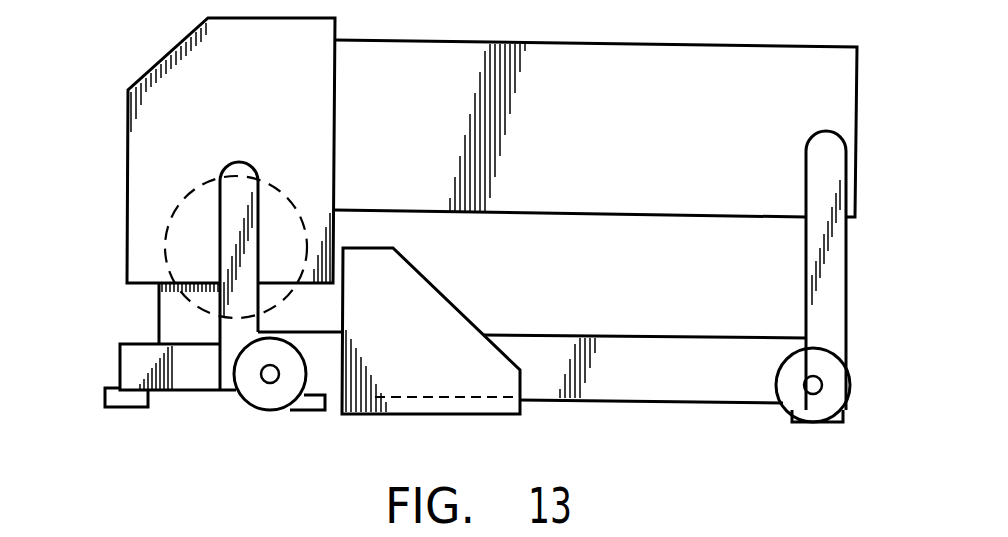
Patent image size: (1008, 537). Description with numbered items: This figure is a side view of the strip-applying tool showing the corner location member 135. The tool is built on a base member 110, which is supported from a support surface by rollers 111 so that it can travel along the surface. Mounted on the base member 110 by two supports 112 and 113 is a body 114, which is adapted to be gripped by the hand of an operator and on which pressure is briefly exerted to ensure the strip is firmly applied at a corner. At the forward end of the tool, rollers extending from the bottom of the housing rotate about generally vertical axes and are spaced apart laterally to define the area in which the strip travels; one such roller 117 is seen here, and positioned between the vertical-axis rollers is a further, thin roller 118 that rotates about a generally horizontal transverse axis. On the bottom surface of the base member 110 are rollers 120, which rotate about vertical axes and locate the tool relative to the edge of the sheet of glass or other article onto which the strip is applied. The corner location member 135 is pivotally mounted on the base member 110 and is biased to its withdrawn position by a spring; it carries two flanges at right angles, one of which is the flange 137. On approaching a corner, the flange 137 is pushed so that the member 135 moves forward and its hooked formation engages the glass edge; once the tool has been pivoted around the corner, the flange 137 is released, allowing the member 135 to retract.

The base member 110 is at (663, 352).
The rollers 111 is at (254, 392).
The support 112 is at (825, 292).
The support 113 is at (242, 222).
The body 114 is at (661, 64).
The roller 117 is at (170, 327).
The thin roller 118 is at (188, 308).
The rollers 120 is at (104, 398).
The corner location member 135 is at (447, 424).
The flange 137 is at (447, 325).